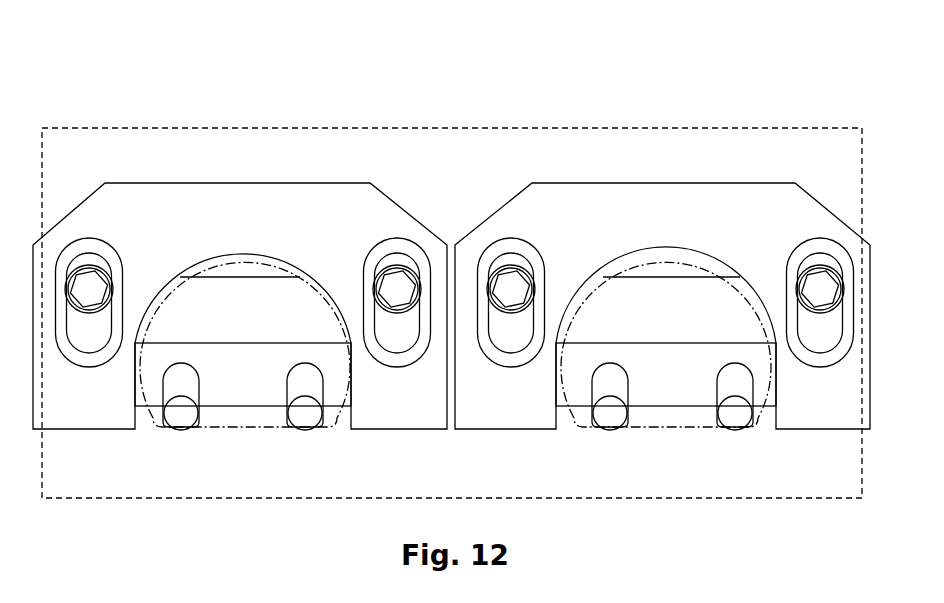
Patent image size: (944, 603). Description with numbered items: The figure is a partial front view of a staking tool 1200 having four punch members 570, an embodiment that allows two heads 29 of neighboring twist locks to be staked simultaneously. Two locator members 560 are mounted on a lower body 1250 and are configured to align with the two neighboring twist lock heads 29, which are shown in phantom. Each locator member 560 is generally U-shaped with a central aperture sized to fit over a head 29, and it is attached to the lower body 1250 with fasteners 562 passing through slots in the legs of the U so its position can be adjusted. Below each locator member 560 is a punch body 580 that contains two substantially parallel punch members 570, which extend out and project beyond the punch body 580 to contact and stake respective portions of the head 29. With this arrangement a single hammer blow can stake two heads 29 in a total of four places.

The staking tool 1200 is at (194, 84).
The lower body 1250 is at (433, 156).
The locator member 560 is at (233, 227).
The fastener 562 is at (822, 266).
The punch body 580 is at (233, 322).
The punch member 570 is at (190, 427).
The head 29 is at (147, 413).